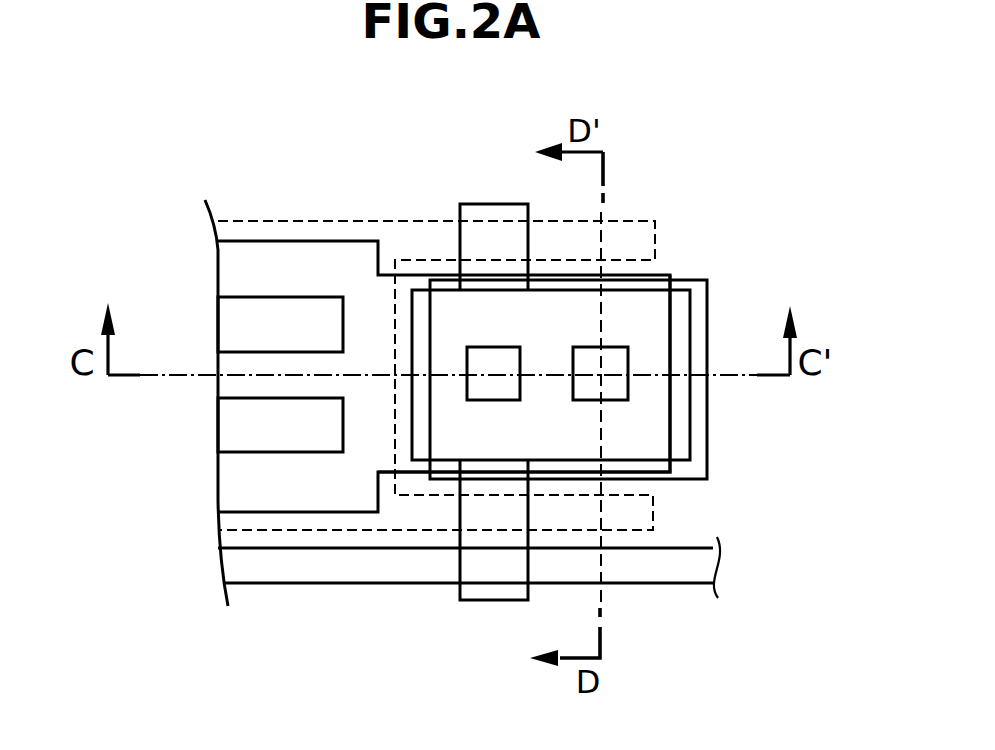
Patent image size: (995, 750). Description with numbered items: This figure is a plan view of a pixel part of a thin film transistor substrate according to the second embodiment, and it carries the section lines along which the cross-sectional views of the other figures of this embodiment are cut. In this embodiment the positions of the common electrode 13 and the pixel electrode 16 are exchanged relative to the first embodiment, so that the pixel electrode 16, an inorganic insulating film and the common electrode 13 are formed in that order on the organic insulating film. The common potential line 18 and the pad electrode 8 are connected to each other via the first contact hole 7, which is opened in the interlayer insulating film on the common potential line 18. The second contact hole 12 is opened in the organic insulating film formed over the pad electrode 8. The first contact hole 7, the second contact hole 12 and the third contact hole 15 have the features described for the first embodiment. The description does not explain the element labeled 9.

The first contact hole 7 is at (466, 347).
The pad electrode 8 is at (691, 303).
The signal line 9 is at (697, 563).
The second contact hole 12 is at (660, 472).
The common electrode 13 is at (230, 485).
The third contact hole 15 is at (623, 347).
The pixel electrode 16 is at (330, 531).
The common potential line 18 is at (497, 205).